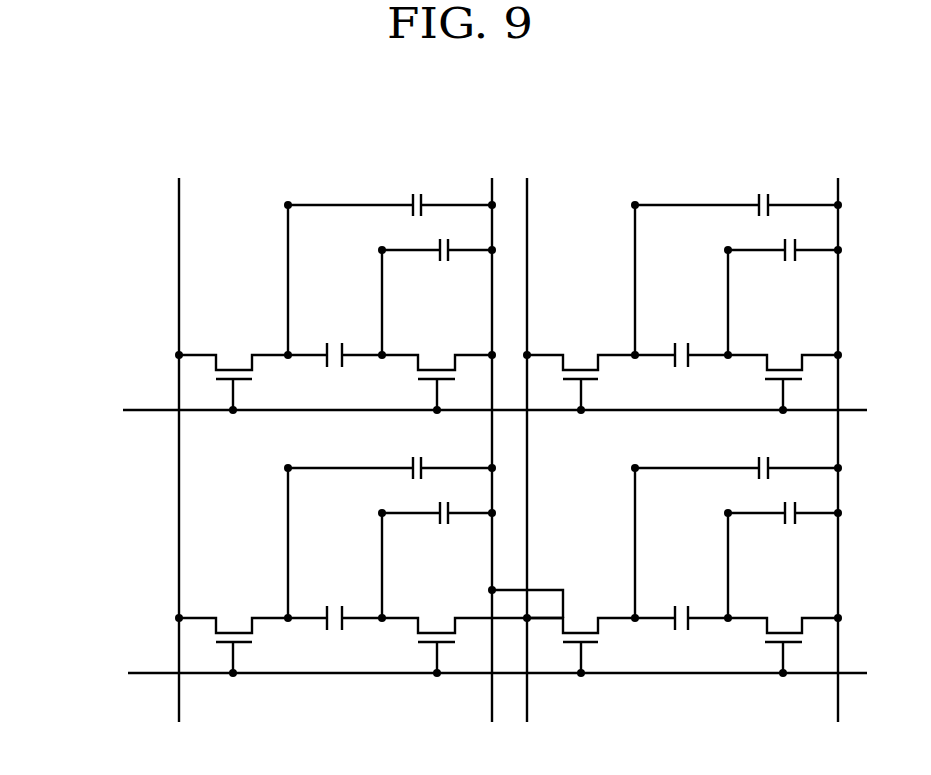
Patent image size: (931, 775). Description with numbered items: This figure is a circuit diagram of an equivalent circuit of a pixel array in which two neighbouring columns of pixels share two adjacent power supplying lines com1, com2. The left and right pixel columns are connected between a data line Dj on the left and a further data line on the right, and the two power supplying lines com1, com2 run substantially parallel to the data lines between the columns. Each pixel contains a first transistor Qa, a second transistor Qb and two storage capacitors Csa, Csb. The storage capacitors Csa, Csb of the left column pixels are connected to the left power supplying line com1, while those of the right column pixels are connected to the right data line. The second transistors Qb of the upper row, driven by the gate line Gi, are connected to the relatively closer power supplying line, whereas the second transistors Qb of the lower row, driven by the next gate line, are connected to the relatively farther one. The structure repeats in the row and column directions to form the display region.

The jth data line Dj is at (179, 427).
The left power supplying line com1 is at (491, 181).
The right power supplying line com2 is at (528, 181).
The ith gate line Gi is at (481, 409).
The storage capacitor Csa is at (563, 390).
The storage capacitor Csb is at (610, 428).
The first transistor Qa is at (508, 516).
The second transistor Qb is at (508, 516).